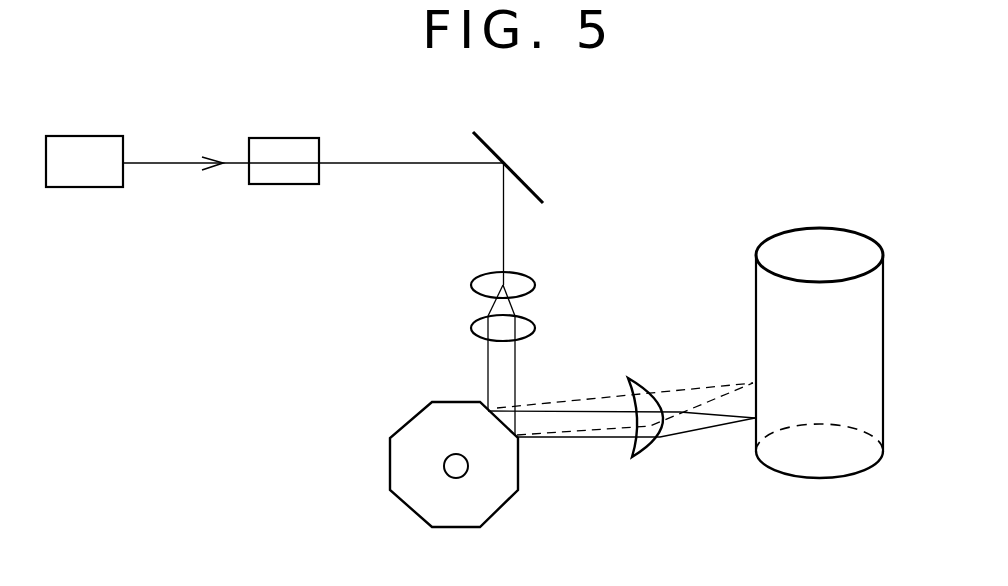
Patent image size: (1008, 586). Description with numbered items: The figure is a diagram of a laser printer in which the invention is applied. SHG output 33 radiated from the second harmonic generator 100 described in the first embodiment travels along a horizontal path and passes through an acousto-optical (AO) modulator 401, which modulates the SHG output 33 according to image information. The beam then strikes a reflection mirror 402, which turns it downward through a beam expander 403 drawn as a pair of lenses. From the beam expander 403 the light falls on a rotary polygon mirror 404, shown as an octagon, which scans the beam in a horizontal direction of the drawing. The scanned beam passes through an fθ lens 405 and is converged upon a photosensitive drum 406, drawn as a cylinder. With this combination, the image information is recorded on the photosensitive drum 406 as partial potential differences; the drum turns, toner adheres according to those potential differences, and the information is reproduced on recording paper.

The second harmonic generator 100 is at (84, 141).
The SHG output 33 is at (313, 182).
The AO modulator 401 is at (284, 139).
The reflection mirror 402 is at (525, 167).
The beam expander 403 is at (465, 299).
The rotary polygon mirror 404 is at (454, 489).
The fθ lens 405 is at (621, 396).
The photosensitive drum 406 is at (819, 376).